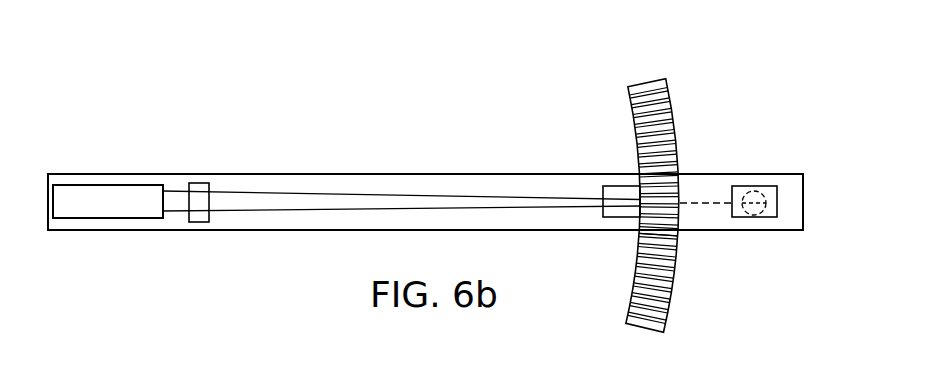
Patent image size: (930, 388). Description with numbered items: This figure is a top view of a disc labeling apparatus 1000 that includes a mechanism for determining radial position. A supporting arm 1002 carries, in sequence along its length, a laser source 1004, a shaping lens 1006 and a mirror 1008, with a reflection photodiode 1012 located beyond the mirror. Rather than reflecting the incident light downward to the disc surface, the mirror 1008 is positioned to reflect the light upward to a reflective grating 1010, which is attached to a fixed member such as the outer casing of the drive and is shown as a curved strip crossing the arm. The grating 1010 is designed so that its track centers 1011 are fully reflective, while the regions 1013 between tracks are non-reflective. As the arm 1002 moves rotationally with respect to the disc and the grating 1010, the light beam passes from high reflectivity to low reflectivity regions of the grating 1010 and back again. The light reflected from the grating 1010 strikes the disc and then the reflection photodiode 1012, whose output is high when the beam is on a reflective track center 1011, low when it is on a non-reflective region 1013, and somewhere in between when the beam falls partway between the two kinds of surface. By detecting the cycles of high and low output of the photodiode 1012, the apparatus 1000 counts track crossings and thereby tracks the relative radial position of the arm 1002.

The disc labeling apparatus 1000 is at (242, 109).
The supporting arm 1002 is at (83, 173).
The laser source 1004 is at (108, 184).
The shaping lens 1006 is at (202, 182).
The mirror 1008 is at (612, 179).
The reflective grating 1010 is at (672, 103).
The track centers 1011 is at (665, 250).
The reflection photodiode 1012 is at (748, 179).
The regions between tracks 1013 is at (657, 280).